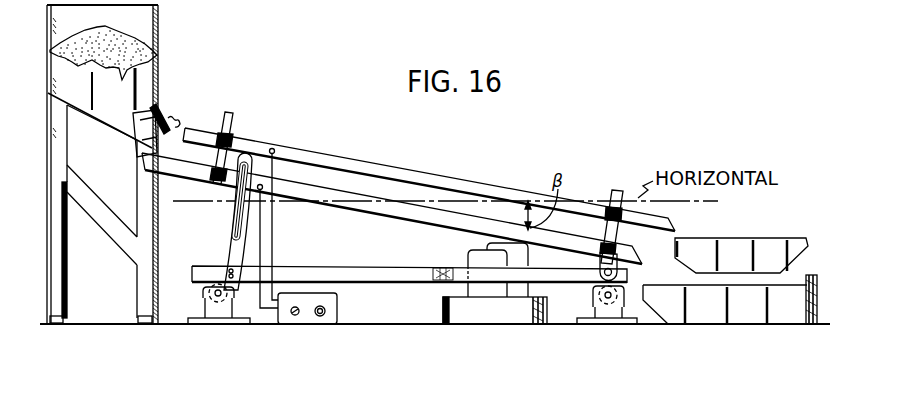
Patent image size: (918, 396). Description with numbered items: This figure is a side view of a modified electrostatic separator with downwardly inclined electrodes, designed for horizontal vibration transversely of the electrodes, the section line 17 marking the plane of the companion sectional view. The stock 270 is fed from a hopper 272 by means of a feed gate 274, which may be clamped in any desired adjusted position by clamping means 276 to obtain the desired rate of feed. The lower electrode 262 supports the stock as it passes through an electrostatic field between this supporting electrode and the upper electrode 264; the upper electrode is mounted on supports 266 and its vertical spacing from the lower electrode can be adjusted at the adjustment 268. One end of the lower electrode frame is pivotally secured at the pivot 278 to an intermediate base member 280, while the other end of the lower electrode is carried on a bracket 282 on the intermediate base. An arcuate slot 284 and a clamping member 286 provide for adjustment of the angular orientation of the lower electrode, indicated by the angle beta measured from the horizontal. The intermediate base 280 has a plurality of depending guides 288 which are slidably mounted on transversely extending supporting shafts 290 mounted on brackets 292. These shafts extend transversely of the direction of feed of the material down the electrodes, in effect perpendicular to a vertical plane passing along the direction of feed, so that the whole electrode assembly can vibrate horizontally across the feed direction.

The section line 17- 17 is at (215, 62).
The lower electrode 262 is at (395, 218).
The upper electrode 264 is at (352, 172).
The supports 266 is at (228, 120).
The vertical spacing adjustment 268 is at (233, 138).
The stock 270 is at (133, 40).
The hopper 272 is at (157, 45).
The feed gate 274 is at (163, 112).
The clamping means 276 is at (170, 123).
The pivot 278 is at (603, 273).
The intermediate base member 280 is at (367, 274).
The bracket 282 is at (230, 252).
The arcuate slot 284 is at (236, 216).
The clamping member 286 is at (222, 187).
The depending guides 288 is at (236, 300).
The supporting shafts 290 is at (215, 293).
The brackets 292 is at (223, 313).